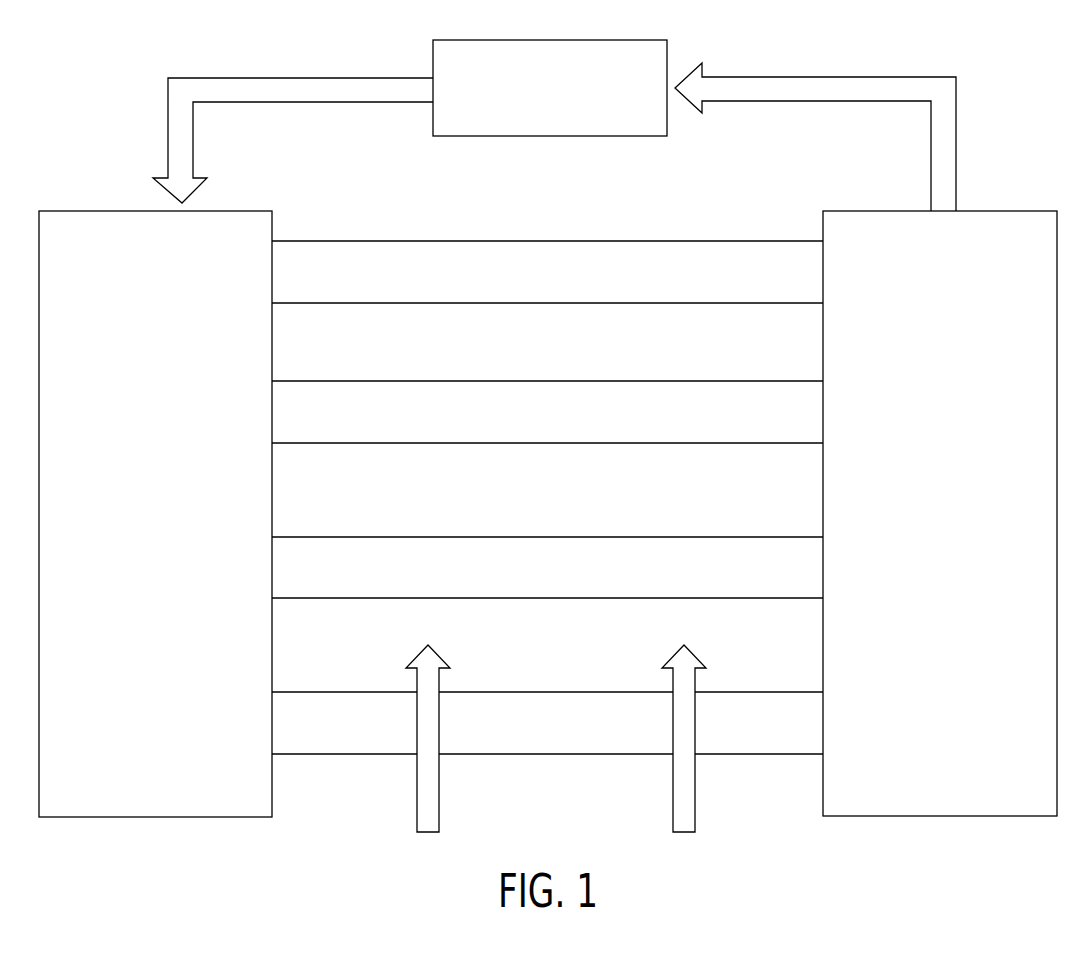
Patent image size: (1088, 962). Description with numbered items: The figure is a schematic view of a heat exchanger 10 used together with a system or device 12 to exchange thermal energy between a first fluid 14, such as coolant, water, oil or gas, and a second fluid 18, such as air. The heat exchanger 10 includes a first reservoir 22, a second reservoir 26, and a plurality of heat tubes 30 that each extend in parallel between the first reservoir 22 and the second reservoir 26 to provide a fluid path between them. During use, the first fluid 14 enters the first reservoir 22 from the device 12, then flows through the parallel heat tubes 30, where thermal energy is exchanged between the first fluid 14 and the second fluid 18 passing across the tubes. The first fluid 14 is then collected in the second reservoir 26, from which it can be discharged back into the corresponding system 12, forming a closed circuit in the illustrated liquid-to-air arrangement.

The heat exchanger 10 is at (684, 173).
The system or device 12 is at (590, 136).
The first fluid 14 is at (180, 100).
The second fluid 18 is at (440, 800).
The first reservoir 22 is at (958, 318).
The second reservoir 26 is at (132, 333).
The heat tubes 30 is at (472, 410).